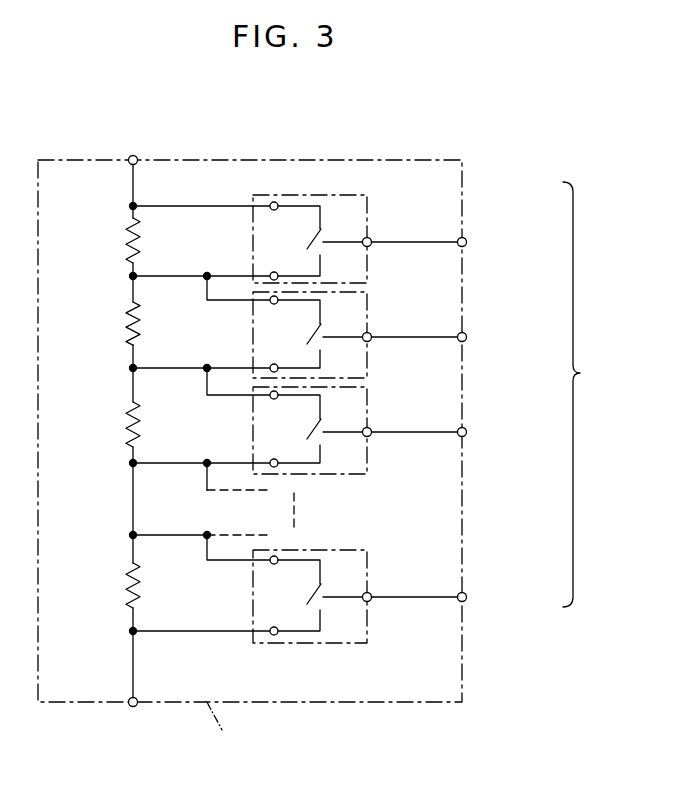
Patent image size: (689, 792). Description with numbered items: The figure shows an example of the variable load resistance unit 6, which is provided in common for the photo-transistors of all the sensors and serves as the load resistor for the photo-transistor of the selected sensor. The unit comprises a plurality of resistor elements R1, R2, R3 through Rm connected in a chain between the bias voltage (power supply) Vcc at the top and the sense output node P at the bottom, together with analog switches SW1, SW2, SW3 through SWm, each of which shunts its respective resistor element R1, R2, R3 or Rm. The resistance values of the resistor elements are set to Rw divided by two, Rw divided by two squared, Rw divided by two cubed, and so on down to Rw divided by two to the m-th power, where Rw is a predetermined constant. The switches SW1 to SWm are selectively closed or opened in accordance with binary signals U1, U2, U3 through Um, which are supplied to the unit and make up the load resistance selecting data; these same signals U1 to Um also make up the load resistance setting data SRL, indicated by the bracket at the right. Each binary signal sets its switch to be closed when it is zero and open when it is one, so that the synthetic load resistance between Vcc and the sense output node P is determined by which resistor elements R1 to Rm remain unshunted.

The load resistance unit 6 is at (290, 160).
The resistor element R1 is at (89, 243).
The resistor element R2 is at (88, 323).
The resistor element R3 is at (88, 422).
The resistor element Rm is at (88, 585).
The analog switch SW1 is at (367, 230).
The analog switch SW2 is at (367, 325).
The analog switch SW3 is at (367, 420).
The analog switch SWm is at (367, 586).
The binary signal U1 is at (553, 242).
The binary signal U2 is at (553, 337).
The binary signal U3 is at (553, 432).
The binary signal Um is at (553, 597).
The bias voltage Vcc is at (131, 149).
The sense output node P is at (133, 717).
The load resistance setting data SRL is at (590, 394).